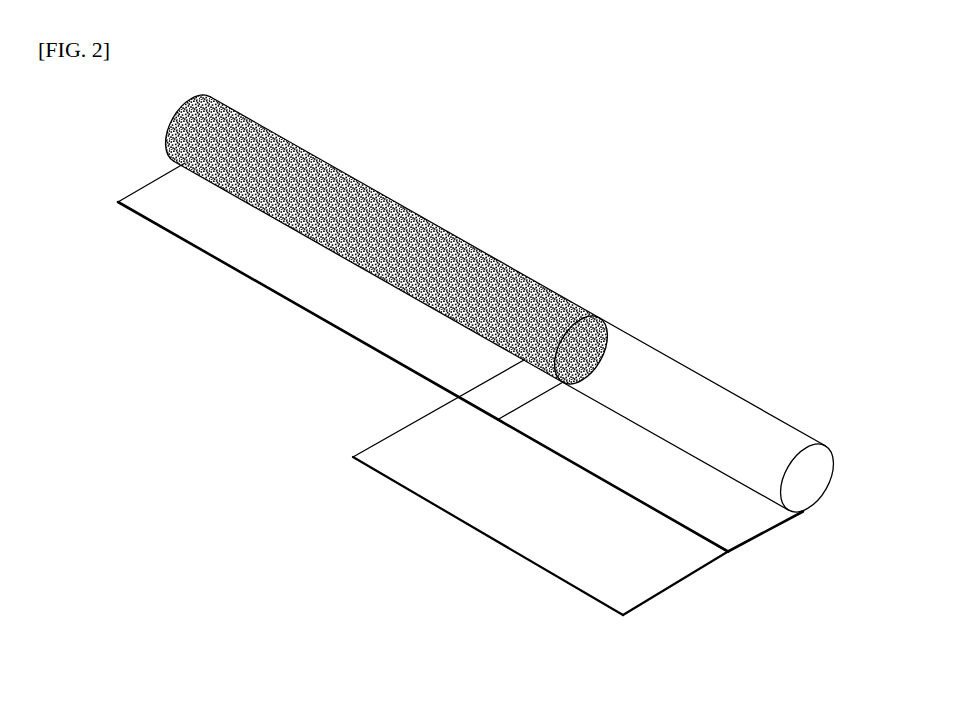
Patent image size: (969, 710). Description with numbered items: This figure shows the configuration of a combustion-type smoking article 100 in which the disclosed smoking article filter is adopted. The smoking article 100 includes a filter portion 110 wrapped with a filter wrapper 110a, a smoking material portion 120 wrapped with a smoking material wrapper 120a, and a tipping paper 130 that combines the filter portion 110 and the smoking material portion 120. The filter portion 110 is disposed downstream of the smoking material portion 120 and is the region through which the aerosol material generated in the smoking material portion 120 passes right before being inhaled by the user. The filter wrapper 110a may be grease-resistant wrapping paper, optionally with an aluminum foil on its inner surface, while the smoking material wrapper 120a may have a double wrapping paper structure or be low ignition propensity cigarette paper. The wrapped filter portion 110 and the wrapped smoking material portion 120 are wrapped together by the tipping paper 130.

The smoking article 100 is at (757, 132).
The filter portion 110 is at (712, 412).
The filter wrapper 110a is at (588, 452).
The smoking material portion 120 is at (402, 213).
The smoking material wrapper 120a is at (282, 257).
The tipping paper 130 is at (587, 573).